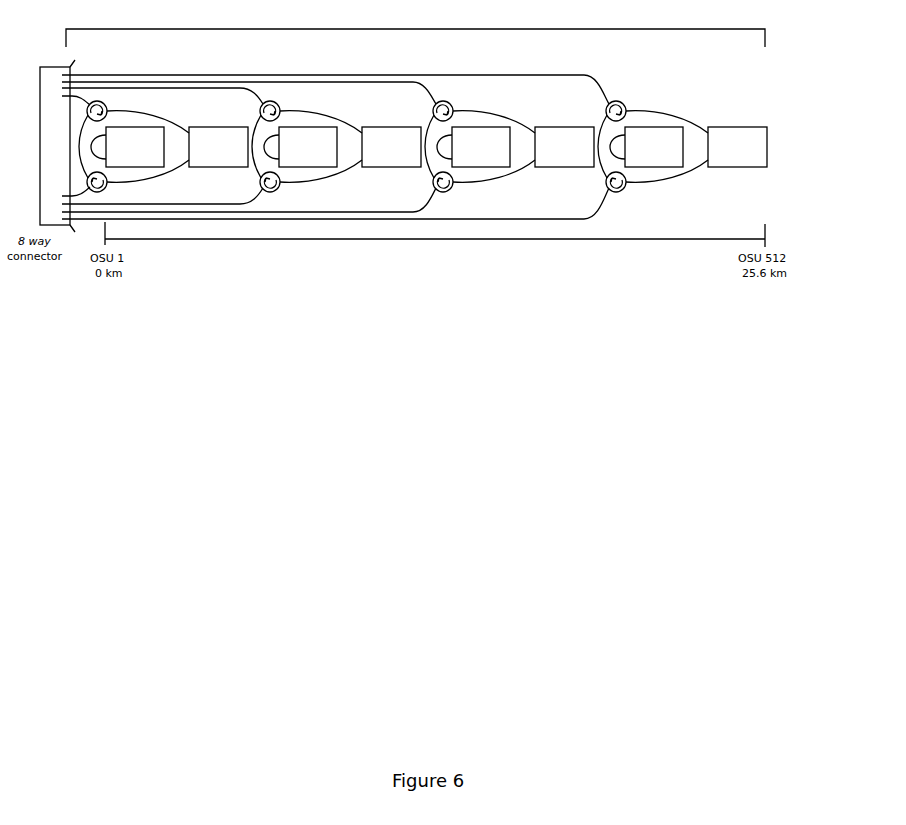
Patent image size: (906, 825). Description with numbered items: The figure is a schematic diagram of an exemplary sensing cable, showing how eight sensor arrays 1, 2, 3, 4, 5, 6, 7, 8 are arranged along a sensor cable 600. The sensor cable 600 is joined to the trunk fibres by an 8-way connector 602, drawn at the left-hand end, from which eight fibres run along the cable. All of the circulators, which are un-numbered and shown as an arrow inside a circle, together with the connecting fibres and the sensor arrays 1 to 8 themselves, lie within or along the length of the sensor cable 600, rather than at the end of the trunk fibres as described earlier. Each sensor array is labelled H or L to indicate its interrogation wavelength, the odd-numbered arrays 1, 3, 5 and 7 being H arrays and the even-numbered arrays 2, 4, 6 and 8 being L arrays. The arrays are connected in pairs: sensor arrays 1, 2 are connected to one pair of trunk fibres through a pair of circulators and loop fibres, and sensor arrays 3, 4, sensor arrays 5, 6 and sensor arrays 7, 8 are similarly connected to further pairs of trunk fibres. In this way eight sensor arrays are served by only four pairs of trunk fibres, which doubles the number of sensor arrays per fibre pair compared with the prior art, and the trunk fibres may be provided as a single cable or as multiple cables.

The sensor cable 600 is at (415, 38).
The 8-way connector 602 is at (57, 146).
The sensor array 1 is at (135, 147).
The sensor array 2 is at (218, 147).
The sensor array 3 is at (308, 147).
The sensor array 4 is at (391, 147).
The sensor array 5 is at (481, 147).
The sensor array 6 is at (564, 147).
The sensor array 7 is at (654, 147).
The sensor array 8 is at (737, 147).